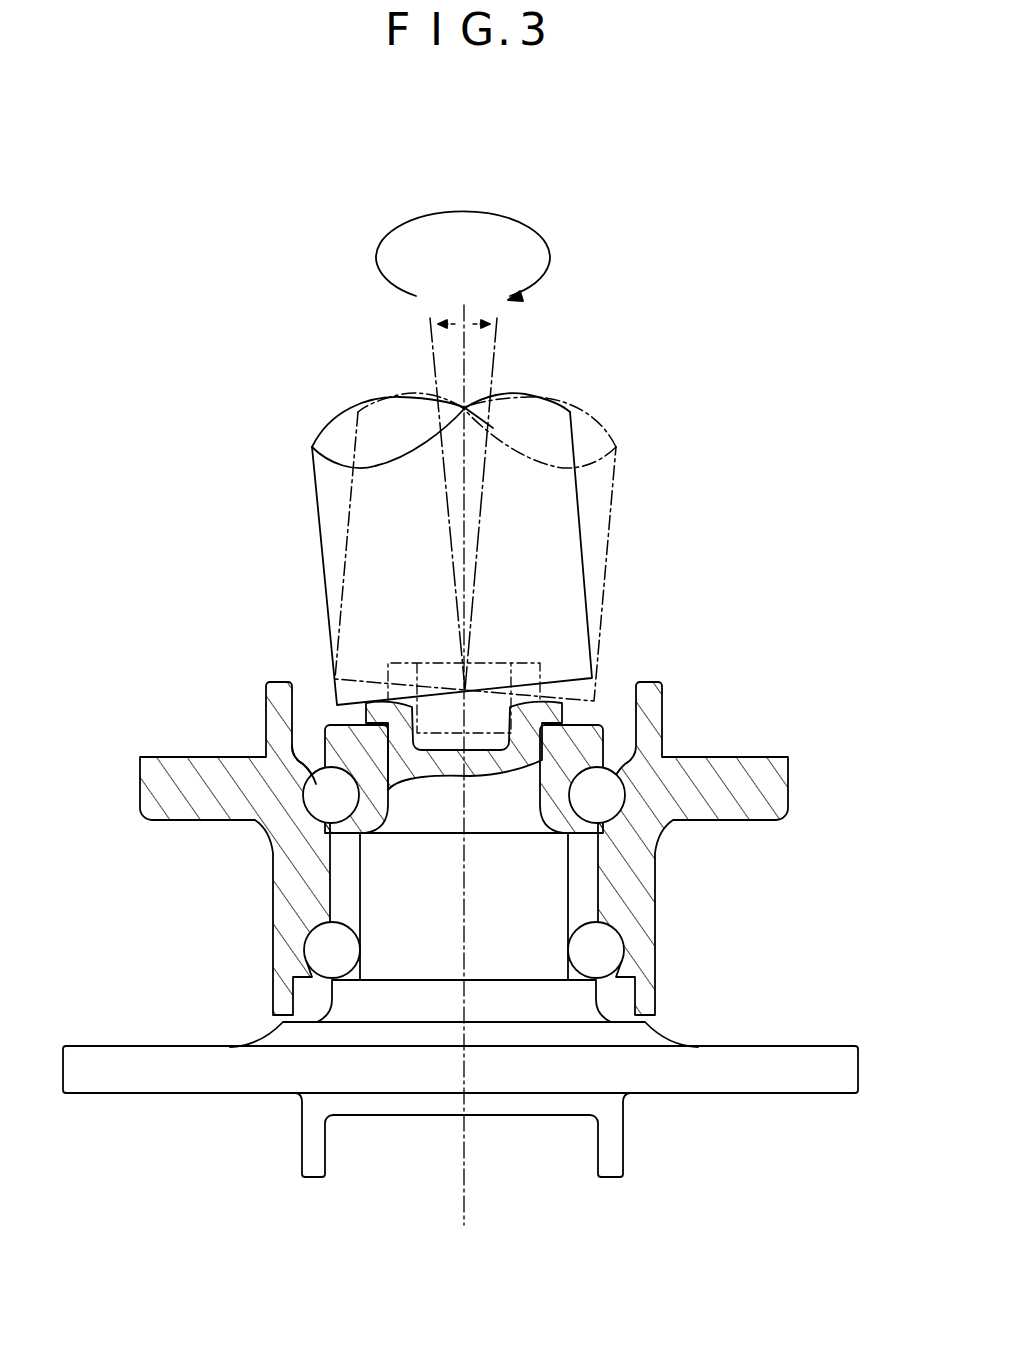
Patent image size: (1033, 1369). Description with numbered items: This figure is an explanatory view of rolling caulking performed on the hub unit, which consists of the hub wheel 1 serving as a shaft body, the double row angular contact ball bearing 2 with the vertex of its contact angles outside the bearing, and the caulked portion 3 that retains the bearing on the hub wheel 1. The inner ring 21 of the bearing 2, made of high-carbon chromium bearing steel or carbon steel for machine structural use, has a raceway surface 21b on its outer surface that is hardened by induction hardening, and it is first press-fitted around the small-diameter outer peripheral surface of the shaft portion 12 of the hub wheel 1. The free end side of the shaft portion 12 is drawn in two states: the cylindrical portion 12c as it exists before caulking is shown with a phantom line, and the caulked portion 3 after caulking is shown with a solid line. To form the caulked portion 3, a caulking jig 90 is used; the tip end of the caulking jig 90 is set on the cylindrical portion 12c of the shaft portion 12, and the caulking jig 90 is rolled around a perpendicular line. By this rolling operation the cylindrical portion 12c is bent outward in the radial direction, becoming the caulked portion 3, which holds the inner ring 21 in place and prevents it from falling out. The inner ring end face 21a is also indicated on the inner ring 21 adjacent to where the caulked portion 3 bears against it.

The hub wheel 1 is at (645, 1095).
The double row angular contact ball bearing 2 is at (654, 910).
The caulked portion 3 is at (363, 713).
The shaft portion 12 is at (359, 903).
The cylindrical portion 12c is at (532, 660).
The inner ring 21 is at (330, 730).
The inner ring end face 21a is at (385, 697).
The raceway surface 21b is at (250, 758).
The caulking jig 90 is at (540, 398).